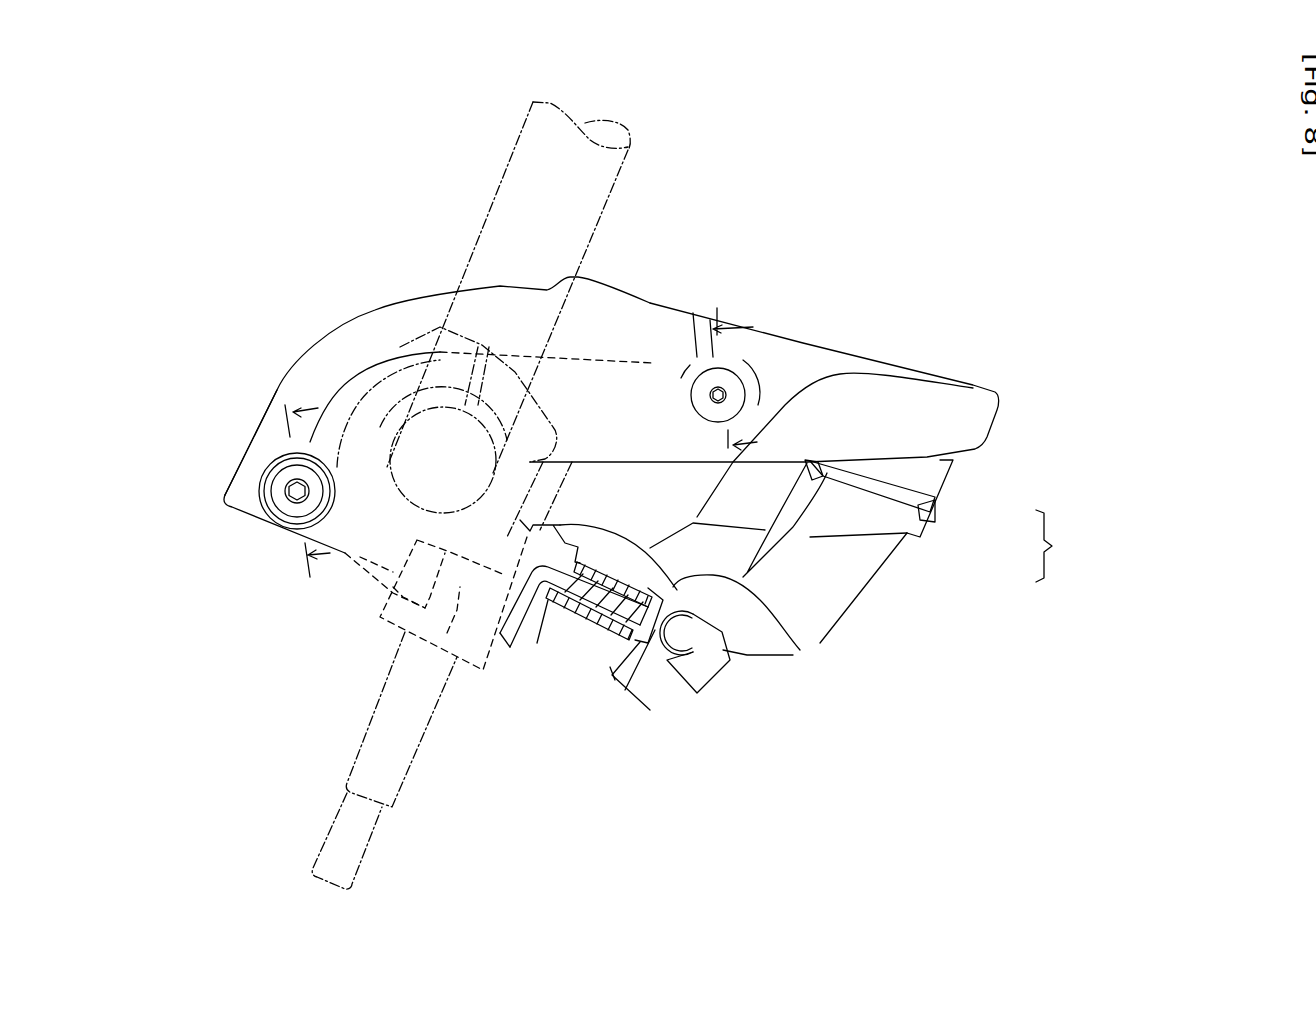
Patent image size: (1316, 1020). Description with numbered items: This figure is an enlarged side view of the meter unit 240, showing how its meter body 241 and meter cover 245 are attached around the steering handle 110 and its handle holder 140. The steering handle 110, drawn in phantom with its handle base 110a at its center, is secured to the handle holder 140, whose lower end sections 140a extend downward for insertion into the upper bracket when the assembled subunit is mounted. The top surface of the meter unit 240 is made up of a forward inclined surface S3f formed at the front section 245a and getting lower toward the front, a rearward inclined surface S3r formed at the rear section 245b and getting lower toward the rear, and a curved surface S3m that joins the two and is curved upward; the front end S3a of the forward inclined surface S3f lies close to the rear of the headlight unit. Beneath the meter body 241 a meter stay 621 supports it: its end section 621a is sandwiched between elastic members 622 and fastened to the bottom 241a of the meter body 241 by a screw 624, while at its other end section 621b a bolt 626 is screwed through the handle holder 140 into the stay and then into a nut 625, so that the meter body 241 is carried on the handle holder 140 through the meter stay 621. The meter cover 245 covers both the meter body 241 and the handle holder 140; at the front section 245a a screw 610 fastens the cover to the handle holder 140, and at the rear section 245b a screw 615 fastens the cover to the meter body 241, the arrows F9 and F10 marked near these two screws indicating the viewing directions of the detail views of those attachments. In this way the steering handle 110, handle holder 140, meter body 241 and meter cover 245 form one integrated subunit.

The steering handle 110 is at (493, 200).
The handle base 110a is at (430, 437).
The handle holder 140 is at (362, 590).
The lower end sections 140a is at (413, 770).
The meter unit 240 is at (872, 543).
The meter body 241 is at (907, 537).
The bottom of meter body 241a is at (800, 650).
The meter cover 245 is at (987, 443).
The front section 245a is at (270, 513).
The rear section 245b is at (765, 430).
The screw 610 is at (283, 511).
The screw 615 is at (697, 313).
The meter stay 621 is at (553, 643).
The end section of meter stay 621a is at (650, 647).
The end section of meter stay 621b is at (500, 628).
The elastic members 622 is at (612, 672).
The screw 624 is at (583, 625).
The nut 625 is at (537, 643).
The bolt 626 is at (447, 633).
The curved surface S3m is at (593, 277).
The forward inclined surface S3f is at (277, 390).
The rearward inclined surface S3r is at (720, 360).
The front end of forward inclined surface S3a is at (233, 478).
The view direction arrow F9 is at (319, 483).
The view direction arrow F10 is at (767, 378).